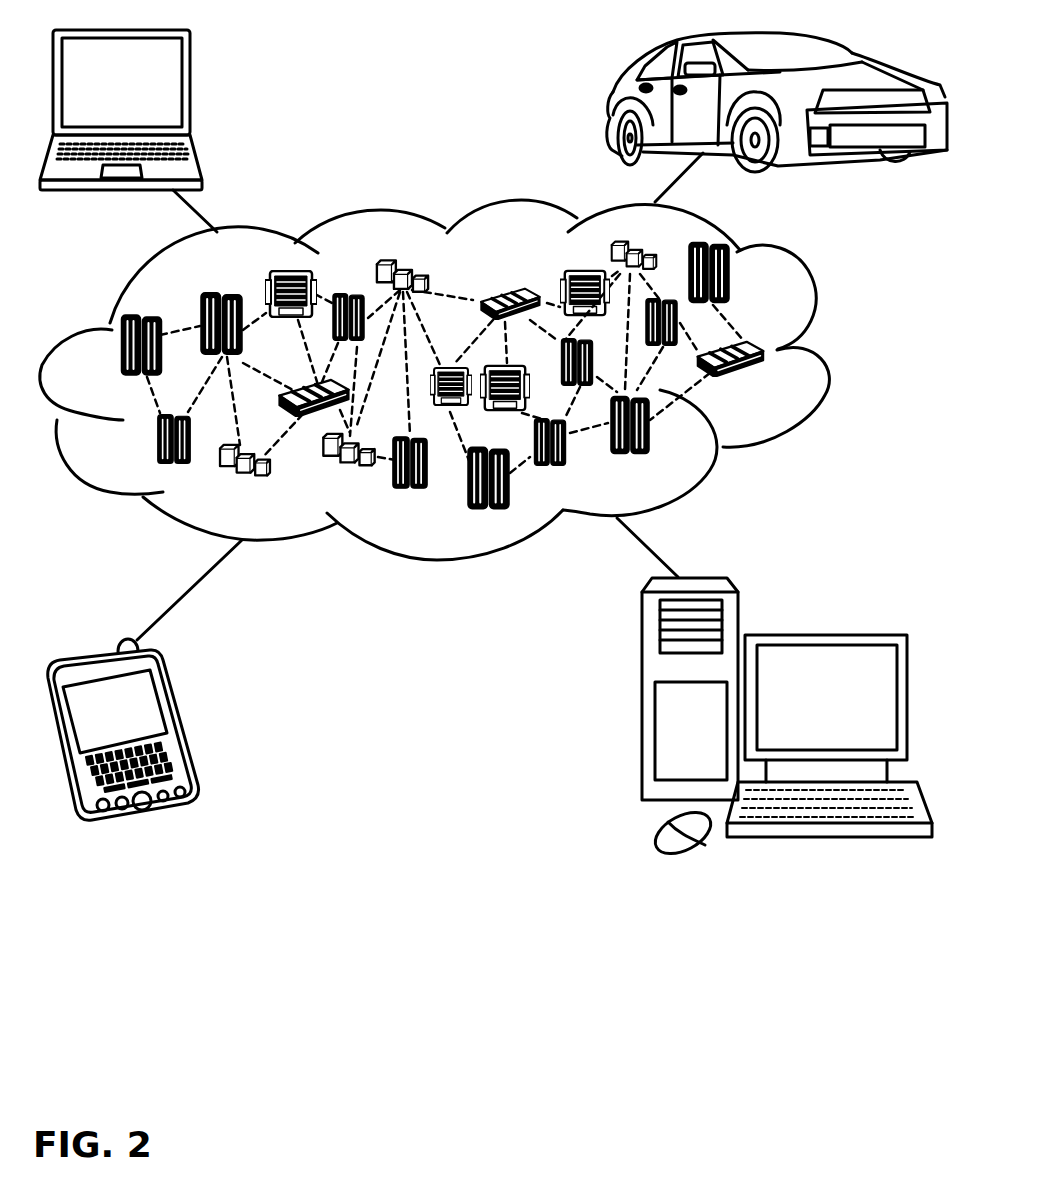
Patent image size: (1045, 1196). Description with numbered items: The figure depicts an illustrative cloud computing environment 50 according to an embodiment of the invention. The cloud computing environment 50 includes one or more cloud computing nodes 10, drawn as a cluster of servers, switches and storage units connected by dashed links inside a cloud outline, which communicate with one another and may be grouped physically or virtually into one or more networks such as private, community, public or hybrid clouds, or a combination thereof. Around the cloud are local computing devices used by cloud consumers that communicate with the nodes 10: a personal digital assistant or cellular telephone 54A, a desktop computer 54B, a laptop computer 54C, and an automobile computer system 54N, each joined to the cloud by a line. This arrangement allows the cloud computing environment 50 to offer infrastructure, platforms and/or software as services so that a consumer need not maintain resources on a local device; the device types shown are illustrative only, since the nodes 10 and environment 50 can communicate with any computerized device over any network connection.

The cloud computing nodes 10 is at (773, 385).
The cloud computing environment 50 is at (827, 356).
The personal digital assistant (PDA) or cellular telephone 54A is at (178, 723).
The desktop computer 54B is at (825, 633).
The laptop computer 54C is at (190, 90).
The automobile computer system 54N is at (612, 100).